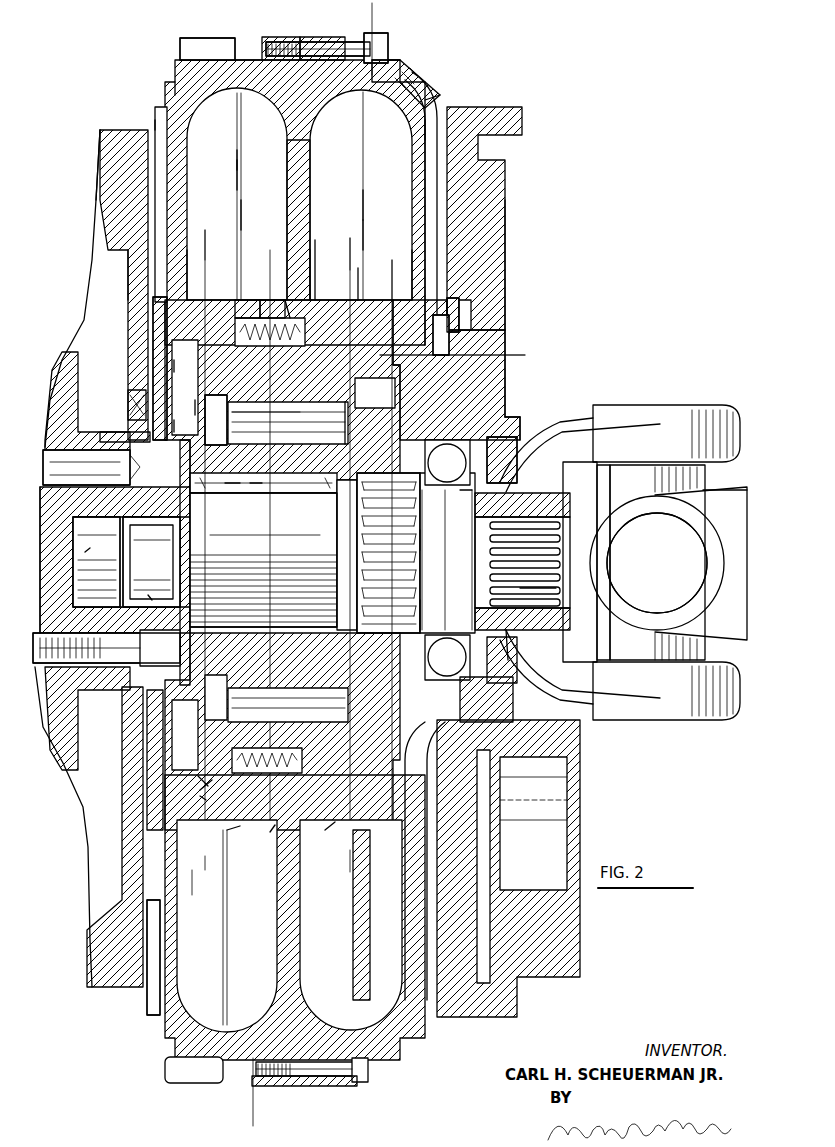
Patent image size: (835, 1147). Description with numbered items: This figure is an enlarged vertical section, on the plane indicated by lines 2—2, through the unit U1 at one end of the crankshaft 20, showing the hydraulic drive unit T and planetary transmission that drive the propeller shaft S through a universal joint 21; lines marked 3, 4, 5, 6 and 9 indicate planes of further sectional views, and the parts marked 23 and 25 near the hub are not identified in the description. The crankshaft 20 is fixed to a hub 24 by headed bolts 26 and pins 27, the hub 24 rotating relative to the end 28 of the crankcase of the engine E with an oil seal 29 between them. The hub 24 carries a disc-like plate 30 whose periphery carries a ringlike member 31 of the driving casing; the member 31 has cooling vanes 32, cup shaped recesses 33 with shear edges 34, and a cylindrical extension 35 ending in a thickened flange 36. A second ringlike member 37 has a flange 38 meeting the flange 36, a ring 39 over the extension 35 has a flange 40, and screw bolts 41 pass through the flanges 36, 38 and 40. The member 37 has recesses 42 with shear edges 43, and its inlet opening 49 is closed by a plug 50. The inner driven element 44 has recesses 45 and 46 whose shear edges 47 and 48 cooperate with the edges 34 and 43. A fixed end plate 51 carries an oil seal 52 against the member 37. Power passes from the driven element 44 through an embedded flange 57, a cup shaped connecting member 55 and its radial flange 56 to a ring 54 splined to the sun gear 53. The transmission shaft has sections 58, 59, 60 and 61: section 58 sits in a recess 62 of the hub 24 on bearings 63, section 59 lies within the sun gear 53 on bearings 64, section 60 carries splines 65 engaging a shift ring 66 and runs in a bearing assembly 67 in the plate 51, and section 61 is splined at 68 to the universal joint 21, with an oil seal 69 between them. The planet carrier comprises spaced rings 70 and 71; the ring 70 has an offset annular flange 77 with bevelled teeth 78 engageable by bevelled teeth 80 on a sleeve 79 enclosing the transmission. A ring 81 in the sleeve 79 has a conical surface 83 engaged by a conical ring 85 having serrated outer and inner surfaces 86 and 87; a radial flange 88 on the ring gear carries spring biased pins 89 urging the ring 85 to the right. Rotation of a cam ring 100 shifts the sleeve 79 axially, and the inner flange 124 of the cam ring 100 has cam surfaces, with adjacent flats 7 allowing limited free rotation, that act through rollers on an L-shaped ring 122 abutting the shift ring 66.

The engine E is at (96, 122).
The hydraulic drive unit T is at (440, 95).
The propeller shaft S is at (733, 490).
The unit U1 is at (145, 1022).
The section line 2 is at (195, 238).
The section line 3- 3 is at (185, 882).
The section line 4- 4 is at (348, 240).
The section line 5- 5 is at (355, 15).
The section line 6- 6 is at (378, 258).
The flats 7 is at (392, 262).
The section line 9- 9 is at (515, 355).
The crankshaft 20 is at (45, 545).
The universal joint 21 is at (660, 573).
The hub 23 is at (85, 552).
The hub 24 is at (135, 432).
The spacer 25 is at (100, 512).
The headed bolts 26 is at (40, 645).
The pins 27 is at (43, 468).
The crankcase end 28 is at (128, 254).
The oil seal 29 is at (135, 395).
The disc-like plate 30 is at (153, 318).
The ringlike member 31 is at (180, 80).
The vanes 32 is at (426, 118).
The cup shaped recesses 33 is at (220, 138).
The shear edges 34 is at (235, 160).
The cylindrical extension 35 is at (258, 65).
The thickened flange 36 is at (305, 40).
The second ringlike member 37 is at (395, 72).
The flange 38 is at (345, 38).
The ring 39 is at (236, 45).
The flange 40 is at (278, 40).
The screw bolts 41 is at (388, 45).
The cup shaped recesses 42 is at (395, 144).
The shear edges 43 is at (363, 210).
The inner driven element 44 is at (305, 170).
The recesses 45 is at (268, 156).
The recesses 46 is at (342, 131).
The shear edges 47 is at (241, 207).
The shear edges 48 is at (355, 194).
The inlet opening 49 is at (422, 100).
The plug 50 is at (408, 84).
The fixed end plate 51 is at (490, 250).
The oil seal 52 is at (457, 300).
The sun gear 53 is at (232, 488).
The ring 54 is at (181, 427).
The cup shaped connecting member 55 is at (178, 372).
The radial flange 56 is at (195, 406).
The flange 57 is at (285, 300).
The shaft section 58 is at (156, 545).
The shaft section 59 is at (303, 518).
The shaft section 60 is at (442, 515).
The shaft section 61 is at (556, 588).
The recess 62 is at (190, 490).
The bearings 63 is at (148, 595).
The bearings 64 is at (255, 488).
The splines 65 is at (414, 540).
The shift ring 66 is at (418, 640).
The bearing assembly 67 is at (460, 490).
The spline connection 68 is at (508, 660).
The oil seal 69 is at (517, 455).
The carrier ring 70 is at (234, 400).
The carrier ring 71 is at (336, 400).
The outer annular flange 77 is at (224, 383).
The bevelled teeth 78 is at (200, 796).
The sleeve 79 is at (316, 240).
The bevelled teeth 80 is at (200, 782).
The ring 81 is at (441, 335).
The conical surface 83 is at (358, 268).
The conical ring 85 is at (325, 830).
The outer serrated surface 86 is at (270, 832).
The inner serrated surface 87 is at (238, 830).
The radial flange 88 is at (245, 300).
The spring biased pins 89 is at (268, 300).
The cam ring 100 is at (490, 338).
The L-shaped ring 122 is at (520, 425).
The inner flange 124 is at (520, 417).